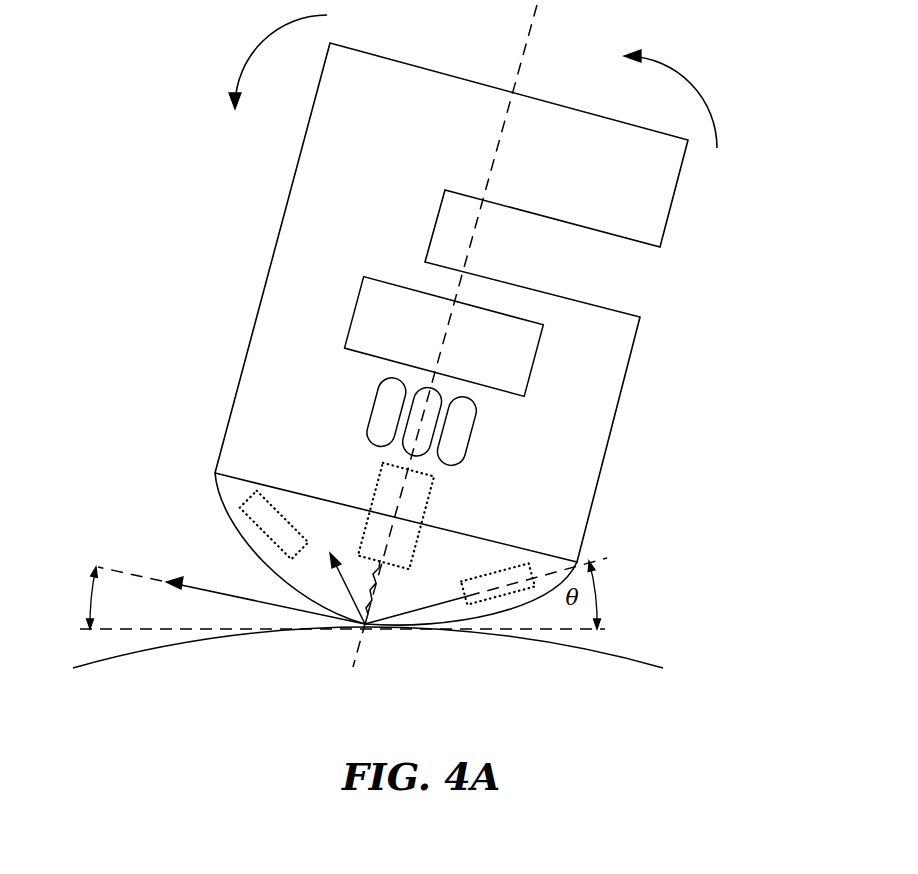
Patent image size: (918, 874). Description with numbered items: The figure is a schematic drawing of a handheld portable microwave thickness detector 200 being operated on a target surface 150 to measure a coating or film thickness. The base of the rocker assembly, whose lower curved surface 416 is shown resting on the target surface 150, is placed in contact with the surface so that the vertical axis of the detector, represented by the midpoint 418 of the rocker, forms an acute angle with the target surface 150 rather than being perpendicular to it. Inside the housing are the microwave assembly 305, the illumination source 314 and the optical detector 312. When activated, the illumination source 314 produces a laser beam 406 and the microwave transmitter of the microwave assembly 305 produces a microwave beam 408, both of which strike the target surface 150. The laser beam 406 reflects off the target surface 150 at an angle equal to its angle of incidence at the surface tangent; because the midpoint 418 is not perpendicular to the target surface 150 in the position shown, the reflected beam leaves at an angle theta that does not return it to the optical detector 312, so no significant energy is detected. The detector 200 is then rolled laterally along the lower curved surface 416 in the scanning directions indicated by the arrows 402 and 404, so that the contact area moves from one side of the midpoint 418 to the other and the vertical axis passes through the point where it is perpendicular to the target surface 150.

The portable microwave thickness detector 200 is at (719, 187).
The arrow 402 is at (688, 73).
The arrow 404 is at (247, 62).
The midpoint 418 is at (524, 45).
The optical detector 312 is at (280, 508).
The microwave assembly 305 is at (430, 496).
The illumination source 314 is at (493, 570).
The lower curved surface 416 is at (219, 495).
The laser beam 406 is at (217, 591).
The microwave beam 408 is at (380, 585).
The target surface 150 is at (622, 647).